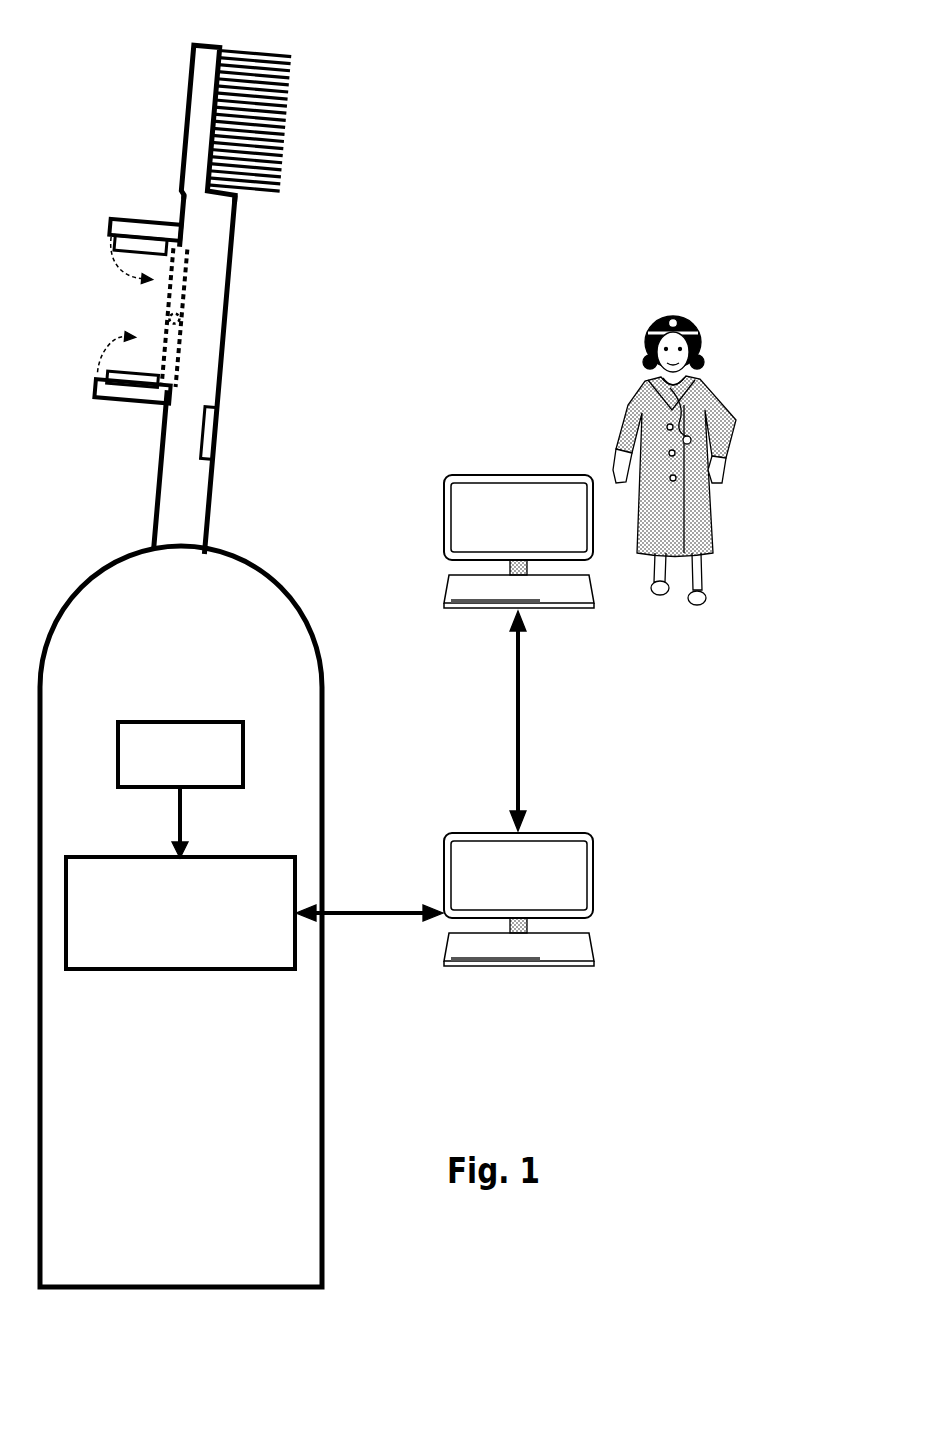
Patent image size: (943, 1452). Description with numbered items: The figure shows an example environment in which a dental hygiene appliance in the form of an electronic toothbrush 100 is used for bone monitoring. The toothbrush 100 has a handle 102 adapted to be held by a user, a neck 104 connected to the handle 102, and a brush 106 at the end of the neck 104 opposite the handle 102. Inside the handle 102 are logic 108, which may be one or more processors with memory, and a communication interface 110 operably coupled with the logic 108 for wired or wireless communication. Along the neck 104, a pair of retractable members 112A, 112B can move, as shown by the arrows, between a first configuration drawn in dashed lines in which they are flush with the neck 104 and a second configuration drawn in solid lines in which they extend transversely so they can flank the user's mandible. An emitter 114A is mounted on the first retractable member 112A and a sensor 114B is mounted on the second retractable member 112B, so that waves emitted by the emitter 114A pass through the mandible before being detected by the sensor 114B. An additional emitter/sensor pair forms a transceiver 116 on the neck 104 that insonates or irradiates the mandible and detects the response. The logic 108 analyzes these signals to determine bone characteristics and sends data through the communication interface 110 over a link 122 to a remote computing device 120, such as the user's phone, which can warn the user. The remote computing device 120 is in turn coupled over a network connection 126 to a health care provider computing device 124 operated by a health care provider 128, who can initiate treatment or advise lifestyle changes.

The electronic toothbrush 100 is at (354, 1018).
The handle 102 is at (323, 1113).
The neck 104 is at (212, 510).
The brush 106 is at (310, 107).
The logic 108 is at (180, 790).
The communication interface 110 is at (180, 913).
The first retractable member 112A is at (146, 226).
The second retractable member 112B is at (130, 405).
The emitter 114A is at (153, 258).
The sensor 114B is at (143, 378).
The transceiver 116 is at (217, 437).
The remote computing device 120 is at (528, 982).
The communication link 122 is at (358, 911).
The health care provider computing device 124 is at (545, 634).
The network connection 126 is at (522, 738).
The health care provider 128 is at (600, 364).